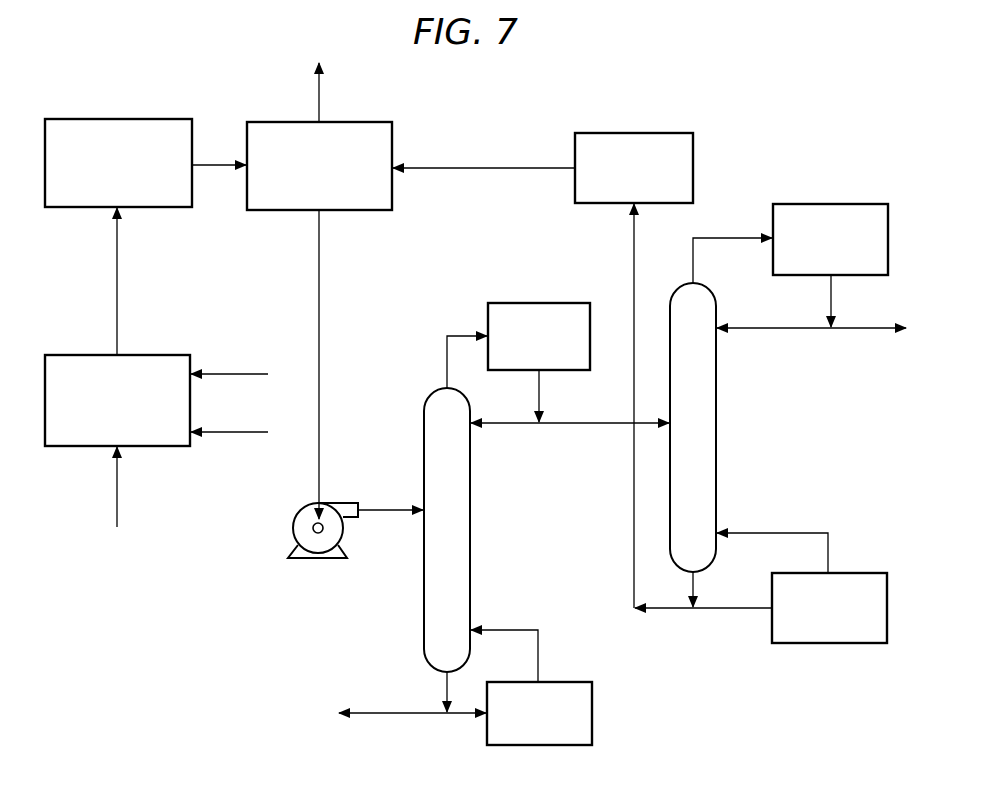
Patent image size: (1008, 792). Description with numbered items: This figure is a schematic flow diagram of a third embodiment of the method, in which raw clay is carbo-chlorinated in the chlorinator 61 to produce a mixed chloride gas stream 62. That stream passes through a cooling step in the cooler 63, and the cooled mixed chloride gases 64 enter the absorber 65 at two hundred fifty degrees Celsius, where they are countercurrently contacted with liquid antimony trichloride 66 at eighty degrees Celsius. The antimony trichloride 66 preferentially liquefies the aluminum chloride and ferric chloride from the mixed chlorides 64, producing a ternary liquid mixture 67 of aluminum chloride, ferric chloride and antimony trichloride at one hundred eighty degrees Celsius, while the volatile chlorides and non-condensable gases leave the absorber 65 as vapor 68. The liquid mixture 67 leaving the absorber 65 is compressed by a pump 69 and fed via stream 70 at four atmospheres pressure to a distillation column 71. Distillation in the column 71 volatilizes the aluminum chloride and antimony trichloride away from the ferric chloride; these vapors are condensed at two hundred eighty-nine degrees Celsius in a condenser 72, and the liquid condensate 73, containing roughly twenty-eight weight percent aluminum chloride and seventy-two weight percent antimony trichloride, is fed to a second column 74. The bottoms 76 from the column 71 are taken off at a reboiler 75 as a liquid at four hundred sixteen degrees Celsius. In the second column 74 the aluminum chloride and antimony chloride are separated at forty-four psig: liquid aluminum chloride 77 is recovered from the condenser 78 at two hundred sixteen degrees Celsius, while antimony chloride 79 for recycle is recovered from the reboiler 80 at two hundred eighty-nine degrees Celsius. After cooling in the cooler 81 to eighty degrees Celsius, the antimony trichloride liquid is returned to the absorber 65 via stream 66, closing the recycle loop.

The chlorinator 61 is at (70, 447).
The mixed chloride gas stream 62 is at (115, 278).
The cooler 63 is at (118, 119).
The mixed chloride gases 64 is at (222, 167).
The absorber 65 is at (392, 143).
The liquid antimony trichloride 66 is at (483, 168).
The ternary liquid mixture 67 is at (320, 314).
The vapor 68 is at (320, 95).
The pump 69 is at (293, 537).
The stream 70 is at (381, 509).
The distillation column 71 is at (470, 548).
The condenser 72 is at (538, 303).
The liquid condensate 73 is at (598, 425).
The second column 74 is at (716, 457).
The reboiler 75 is at (574, 682).
The bottoms 76 is at (398, 711).
The liquid aluminum chloride 77 is at (855, 330).
The condenser 78 is at (833, 204).
The antimony chloride 79 is at (670, 611).
The reboiler 80 is at (867, 572).
The cooler 81 is at (672, 133).